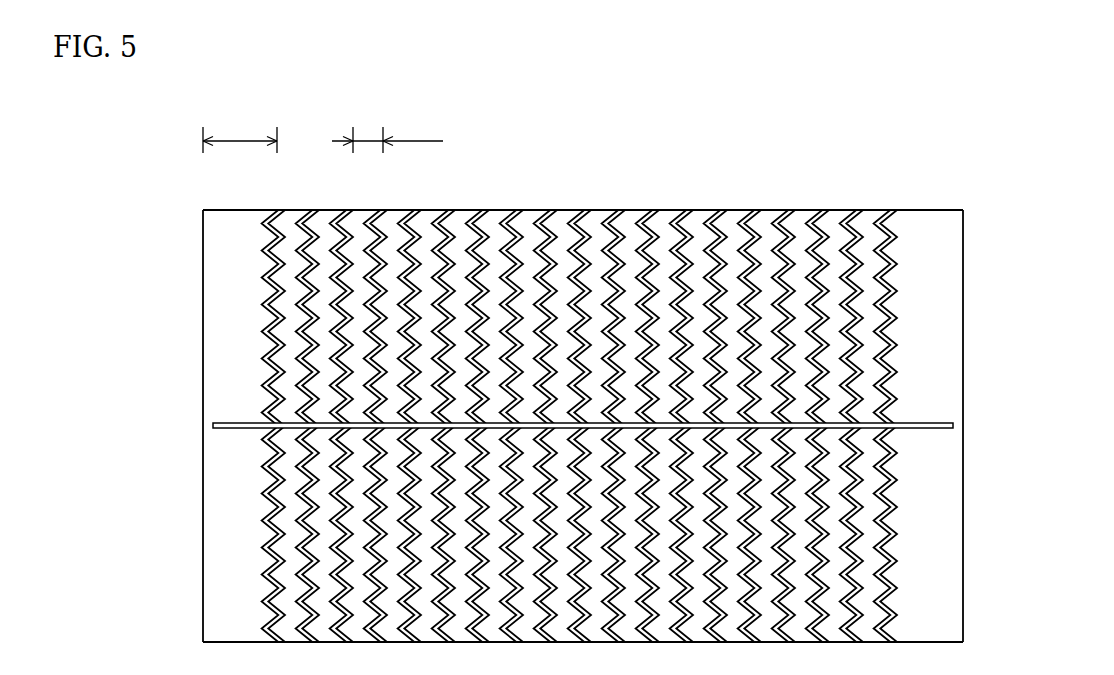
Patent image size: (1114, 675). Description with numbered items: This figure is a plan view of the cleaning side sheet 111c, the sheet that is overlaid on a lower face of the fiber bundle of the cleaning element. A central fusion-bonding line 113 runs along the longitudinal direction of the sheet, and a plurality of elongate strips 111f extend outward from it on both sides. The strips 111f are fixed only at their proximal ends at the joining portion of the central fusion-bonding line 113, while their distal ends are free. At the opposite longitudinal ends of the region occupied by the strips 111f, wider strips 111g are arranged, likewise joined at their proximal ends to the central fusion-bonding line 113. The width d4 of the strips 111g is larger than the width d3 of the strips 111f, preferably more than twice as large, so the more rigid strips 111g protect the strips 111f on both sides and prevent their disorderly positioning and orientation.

The cleaning side sheet 111c is at (772, 168).
The strips 111f is at (346, 213).
The strips 111g is at (222, 270).
The central fusion-bonding line 113 is at (247, 428).
The width of the strips 111f d3 is at (387, 128).
The width of the strips 111g d4 is at (240, 130).